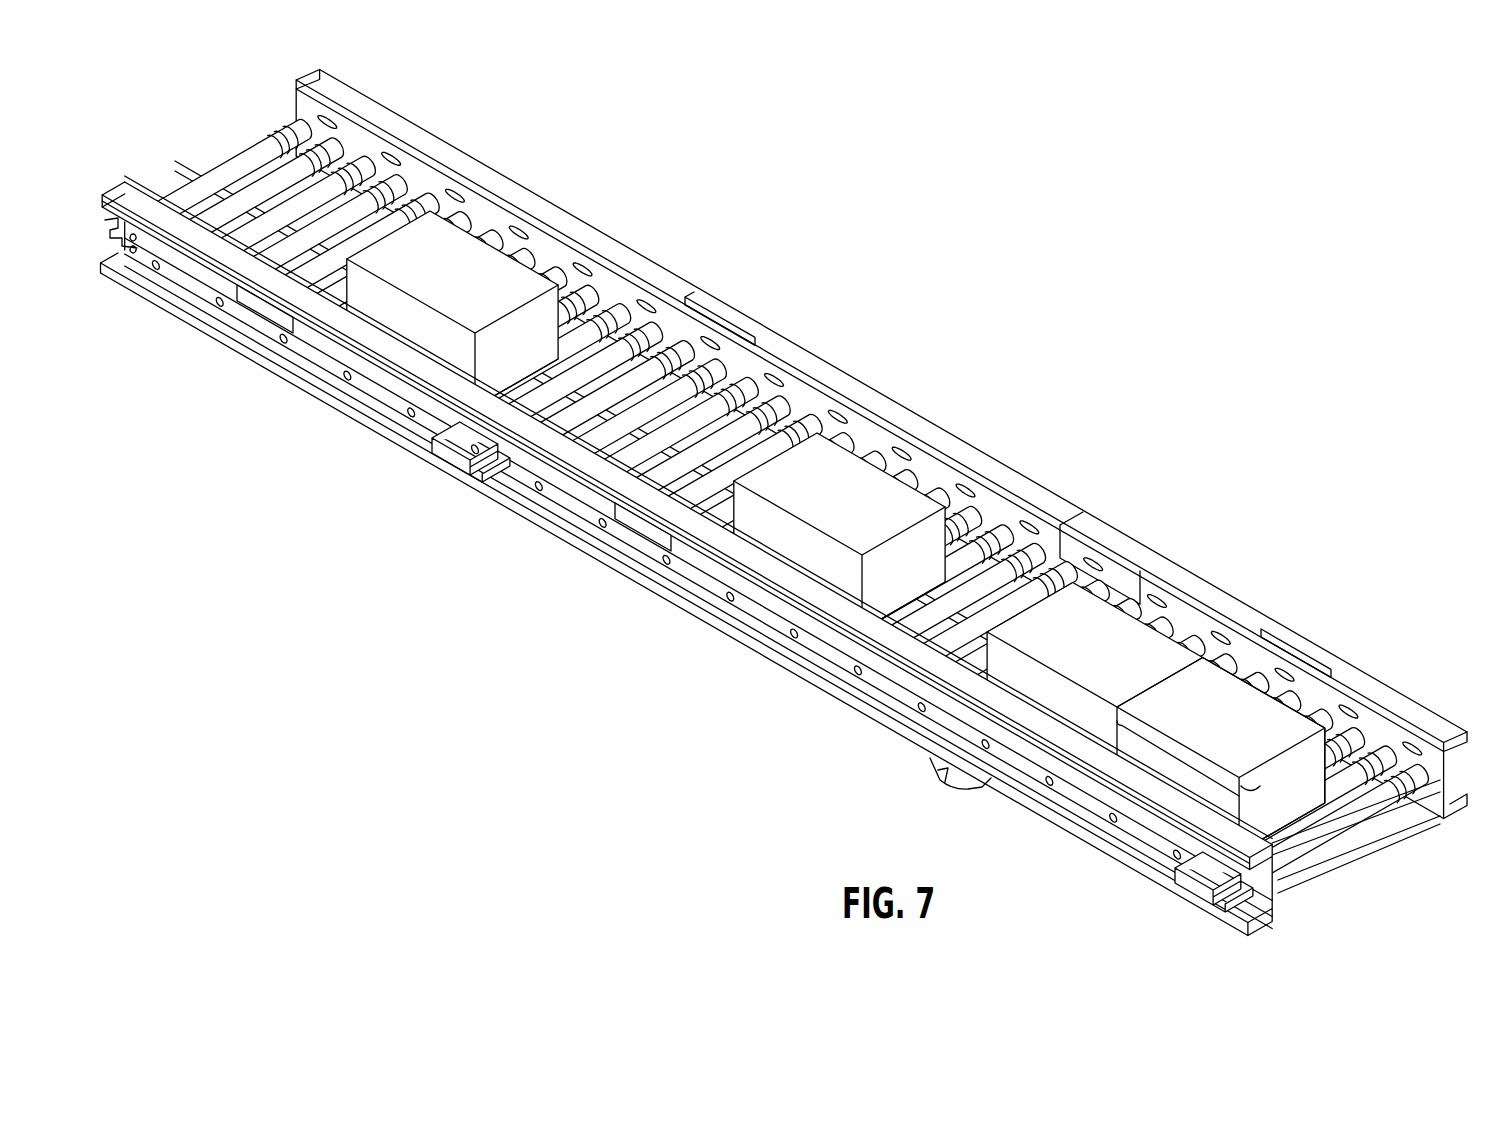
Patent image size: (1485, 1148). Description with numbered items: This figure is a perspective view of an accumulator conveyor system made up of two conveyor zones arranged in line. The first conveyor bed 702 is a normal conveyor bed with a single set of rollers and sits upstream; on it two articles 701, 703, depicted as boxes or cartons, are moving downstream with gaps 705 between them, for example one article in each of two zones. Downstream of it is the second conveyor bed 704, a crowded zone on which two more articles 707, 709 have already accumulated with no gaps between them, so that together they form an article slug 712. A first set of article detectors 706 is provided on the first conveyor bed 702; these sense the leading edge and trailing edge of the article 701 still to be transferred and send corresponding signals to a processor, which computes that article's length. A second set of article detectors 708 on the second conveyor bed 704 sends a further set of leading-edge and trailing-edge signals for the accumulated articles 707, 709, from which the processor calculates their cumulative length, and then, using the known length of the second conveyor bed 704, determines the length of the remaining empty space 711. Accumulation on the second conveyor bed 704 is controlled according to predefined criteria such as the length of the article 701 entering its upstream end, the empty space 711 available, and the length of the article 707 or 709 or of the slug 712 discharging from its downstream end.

The article 701 is at (835, 470).
The first conveyor bed 702 is at (312, 272).
The article 703 is at (505, 272).
The second conveyor bed 704 is at (953, 642).
The gaps 705 is at (600, 440).
The first set of article detectors 706 is at (590, 278).
The article 707 is at (980, 627).
The second set of article detectors 708 is at (1214, 630).
The article 709 is at (1233, 702).
The empty space 711 is at (1085, 618).
The article slug 712 is at (1123, 723).